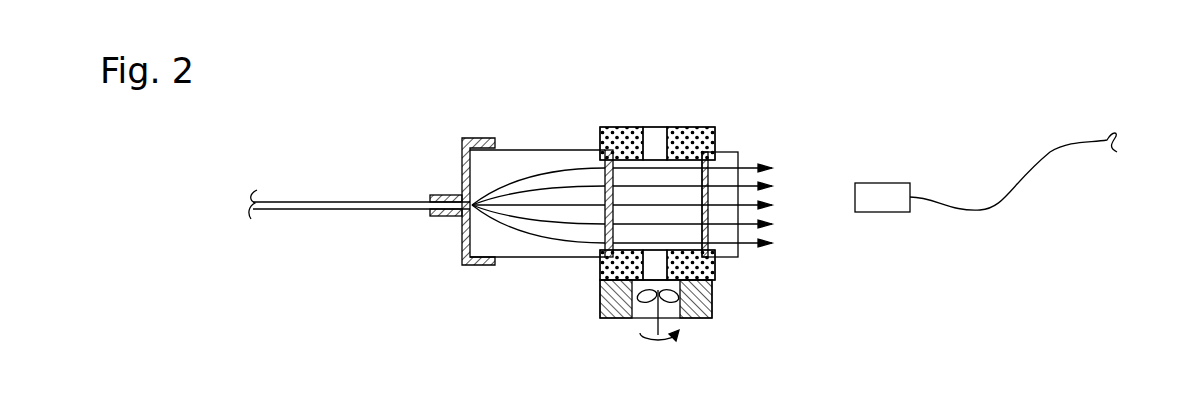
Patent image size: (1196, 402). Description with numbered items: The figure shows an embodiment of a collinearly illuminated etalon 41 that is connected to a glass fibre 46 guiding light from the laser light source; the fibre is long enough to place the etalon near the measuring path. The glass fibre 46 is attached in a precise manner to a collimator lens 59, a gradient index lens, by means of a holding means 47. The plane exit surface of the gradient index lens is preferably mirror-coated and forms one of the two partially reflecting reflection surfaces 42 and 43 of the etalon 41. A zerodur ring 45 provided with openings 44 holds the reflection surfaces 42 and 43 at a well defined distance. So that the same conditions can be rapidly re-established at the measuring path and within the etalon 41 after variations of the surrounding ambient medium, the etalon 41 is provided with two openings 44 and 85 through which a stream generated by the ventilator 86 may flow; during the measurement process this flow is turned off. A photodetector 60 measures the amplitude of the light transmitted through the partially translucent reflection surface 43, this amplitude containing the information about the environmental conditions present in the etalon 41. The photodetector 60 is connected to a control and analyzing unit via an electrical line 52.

The collinearly illuminated etalon 41 is at (622, 125).
The partially reflecting reflection surface 42 is at (612, 215).
The partially translucent reflection surface 43 is at (690, 210).
The openings 44 is at (656, 138).
The zerodur ring 45 is at (697, 128).
The glass fibre 46 is at (307, 200).
The fiber connector 47 is at (475, 138).
The electrical line 52 is at (1050, 150).
The collimator lens 59 is at (555, 150).
The photodetector 60 is at (887, 183).
The opening 85 is at (712, 305).
The ventilator 86 is at (638, 305).